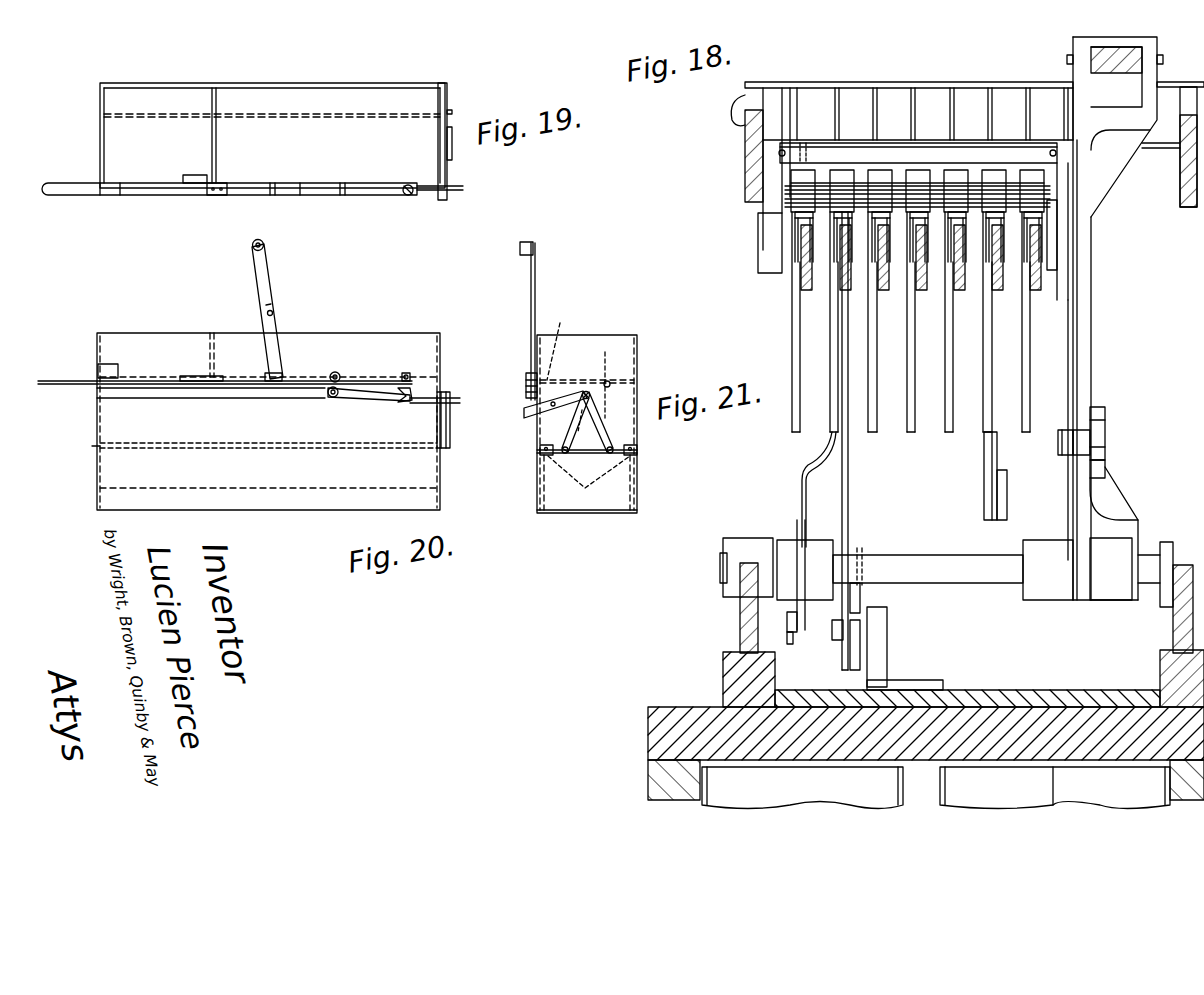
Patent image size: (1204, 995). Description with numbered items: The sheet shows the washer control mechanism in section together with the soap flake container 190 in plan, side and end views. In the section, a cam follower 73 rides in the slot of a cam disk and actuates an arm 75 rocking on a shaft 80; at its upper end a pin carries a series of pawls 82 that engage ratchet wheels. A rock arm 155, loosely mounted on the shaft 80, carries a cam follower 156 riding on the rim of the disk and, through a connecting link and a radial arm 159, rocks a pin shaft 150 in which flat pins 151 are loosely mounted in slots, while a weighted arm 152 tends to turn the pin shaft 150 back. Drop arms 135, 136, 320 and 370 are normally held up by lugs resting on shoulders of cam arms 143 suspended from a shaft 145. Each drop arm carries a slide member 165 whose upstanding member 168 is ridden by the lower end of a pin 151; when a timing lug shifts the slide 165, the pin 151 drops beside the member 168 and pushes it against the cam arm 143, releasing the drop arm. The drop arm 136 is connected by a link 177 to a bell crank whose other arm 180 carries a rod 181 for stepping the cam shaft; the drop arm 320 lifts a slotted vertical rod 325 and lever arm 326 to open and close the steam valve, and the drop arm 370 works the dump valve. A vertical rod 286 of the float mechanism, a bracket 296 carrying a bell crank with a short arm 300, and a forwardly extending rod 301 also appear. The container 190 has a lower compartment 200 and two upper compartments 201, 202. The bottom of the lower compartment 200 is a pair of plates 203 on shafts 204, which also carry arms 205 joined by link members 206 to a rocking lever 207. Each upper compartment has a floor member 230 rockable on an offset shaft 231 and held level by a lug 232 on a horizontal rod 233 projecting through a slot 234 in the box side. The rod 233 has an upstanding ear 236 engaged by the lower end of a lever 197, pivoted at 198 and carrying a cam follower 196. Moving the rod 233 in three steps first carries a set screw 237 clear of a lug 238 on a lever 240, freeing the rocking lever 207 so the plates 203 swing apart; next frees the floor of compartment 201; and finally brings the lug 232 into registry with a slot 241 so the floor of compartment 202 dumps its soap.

In FIG. 18, the cam follower 73 is at (1085, 442).
In FIG. 18, the arm 75 is at (1085, 280).
In FIG. 18, the shaft 80 is at (958, 562).
In FIG. 18, the pawls 82 is at (1125, 58).
In FIG. 18, the drop arm 135 is at (808, 292).
In FIG. 18, the drop arm 136 is at (851, 292).
In FIG. 18, the cam arm 143 is at (907, 338).
In FIG. 18, the shaft 145 is at (1073, 108).
In FIG. 18, the pin shaft 150 is at (788, 240).
In FIG. 18, the flat pins 151 is at (846, 182).
In FIG. 18, the weighted arm 152 is at (758, 252).
In FIG. 18, the rock arm 155 is at (1073, 378).
In FIG. 18, the cam follower 156 is at (1062, 455).
In FIG. 18, the radial arm 159 is at (1075, 226).
In FIG. 18, the slide member 165 is at (960, 292).
In FIG. 18, the upstanding member 168 is at (936, 230).
In FIG. 18, the link 177 is at (803, 464).
In FIG. 18, the arm of bell crank 180 is at (790, 606).
In FIG. 18, the rod 181 is at (795, 640).
In FIG. 20, the container 190 is at (425, 340).
In FIG. 20, the cam follower 196 is at (263, 243).
In FIG. 21, the cam follower 196 is at (533, 242).
In FIG. 20, the lever 197 is at (275, 285).
In FIG. 21, the lever 197 is at (537, 280).
In FIG. 20, the pivot 198 is at (273, 314).
In FIG. 20, the lower compartment 200 is at (108, 427).
In FIG. 21, the lower compartment 200 is at (555, 420).
In FIG. 19, the upper compartment 201 is at (330, 128).
In FIG. 21, the upper compartment 201 is at (604, 346).
In FIG. 19, the upper compartment 202 is at (178, 128).
In FIG. 21, the plates 203 is at (570, 490).
In FIG. 21, the shafts 204 is at (540, 450).
In FIG. 21, the arms 205 is at (563, 455).
In FIG. 21, the link members 206 is at (578, 426).
In FIG. 21, the rocking lever 207 is at (527, 390).
In FIG. 21, the floor member 230 is at (612, 352).
In FIG. 21, the shaft 231 is at (612, 384).
In FIG. 19, the lug 232 is at (224, 183).
In FIG. 21, the lug 232 is at (566, 340).
In FIG. 19, the horizontal rod 233 is at (166, 195).
In FIG. 20, the horizontal rod 233 is at (70, 381).
In FIG. 20, the slot 234 is at (190, 376).
In FIG. 20, the upstanding ear 236 is at (266, 376).
In FIG. 20, the set screw 237 is at (404, 374).
In FIG. 20, the lug 238 is at (406, 402).
In FIG. 20, the lever 240 is at (362, 394).
In FIG. 19, the slot 241 is at (196, 178).
In FIG. 18, the vertical rod 286 is at (849, 494).
In FIG. 18, the bracket 296 is at (880, 658).
In FIG. 18, the short arm 300 is at (860, 553).
In FIG. 18, the rod 301 is at (862, 590).
In FIG. 18, the drop arm 320 is at (1000, 300).
In FIG. 18, the vertical rod 325 is at (986, 450).
In FIG. 18, the lever arm 326 is at (1003, 516).
In FIG. 18, the drop arm 370 is at (923, 295).